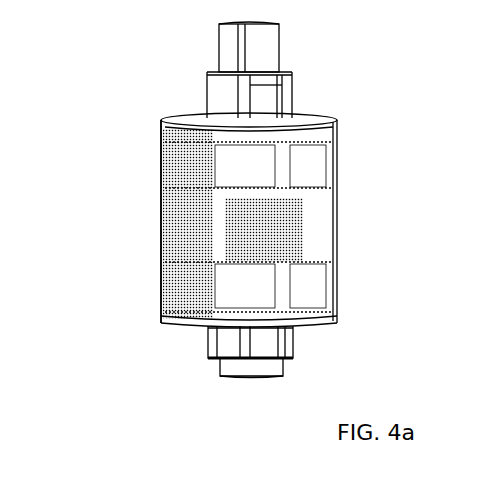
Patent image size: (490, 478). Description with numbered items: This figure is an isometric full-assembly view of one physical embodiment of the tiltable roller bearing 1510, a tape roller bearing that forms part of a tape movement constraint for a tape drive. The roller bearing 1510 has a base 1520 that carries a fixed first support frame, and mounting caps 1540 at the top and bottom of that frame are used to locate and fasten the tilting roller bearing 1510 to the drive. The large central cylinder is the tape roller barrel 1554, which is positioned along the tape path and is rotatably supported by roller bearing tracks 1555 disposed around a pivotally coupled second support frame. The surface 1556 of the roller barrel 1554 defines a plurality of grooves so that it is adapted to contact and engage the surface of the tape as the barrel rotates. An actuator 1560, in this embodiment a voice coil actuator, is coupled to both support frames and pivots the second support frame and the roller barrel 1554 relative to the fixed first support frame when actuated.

The tiltable roller bearing 1510 is at (95, 78).
The base 1520 is at (204, 346).
The mounting caps 1540 is at (263, 36).
The tape roller barrel 1554 is at (343, 136).
The roller bearing tracks 1555 is at (300, 164).
The surface of the roller barrel 1556 is at (161, 200).
The actuator 1560 is at (293, 89).